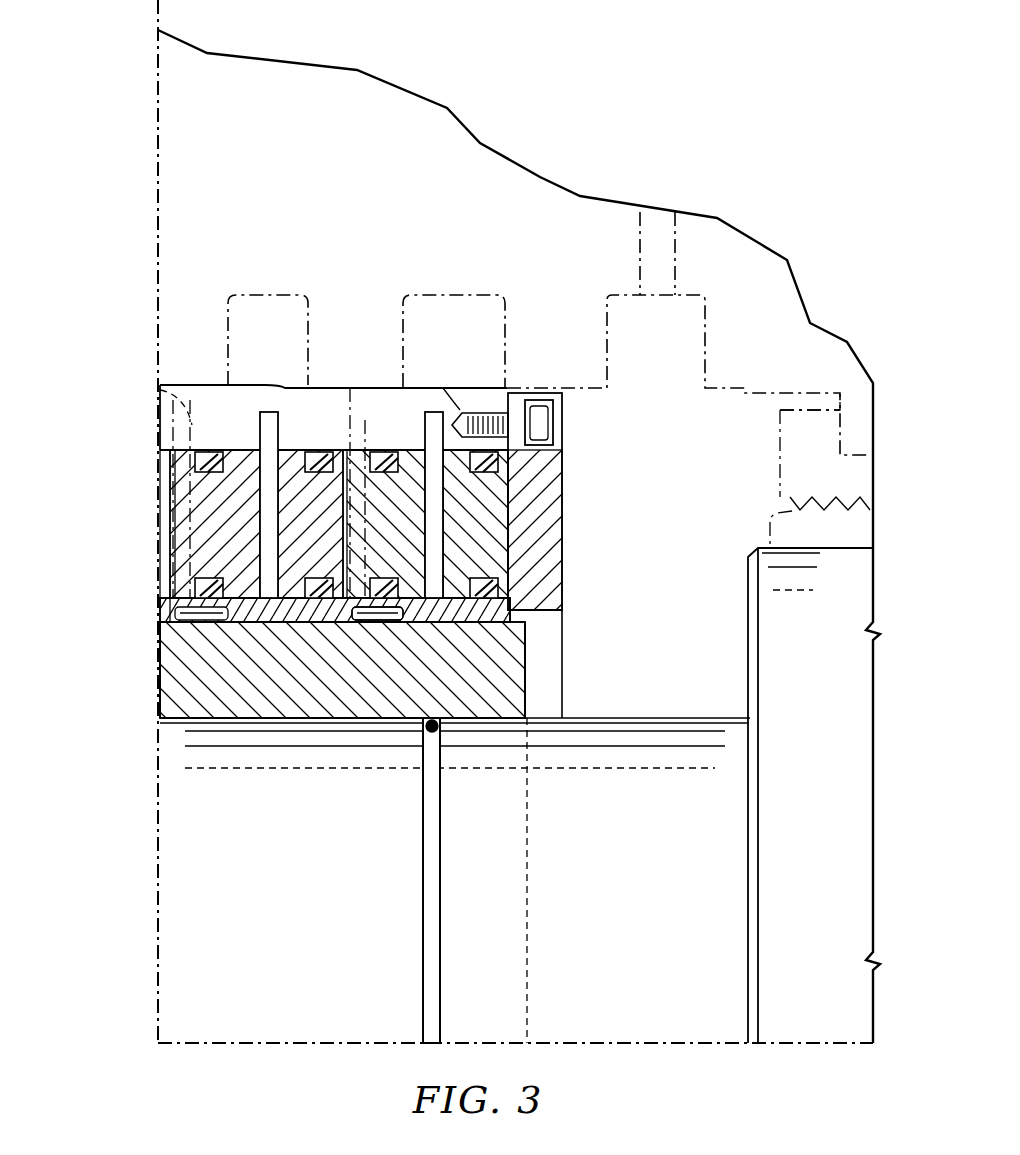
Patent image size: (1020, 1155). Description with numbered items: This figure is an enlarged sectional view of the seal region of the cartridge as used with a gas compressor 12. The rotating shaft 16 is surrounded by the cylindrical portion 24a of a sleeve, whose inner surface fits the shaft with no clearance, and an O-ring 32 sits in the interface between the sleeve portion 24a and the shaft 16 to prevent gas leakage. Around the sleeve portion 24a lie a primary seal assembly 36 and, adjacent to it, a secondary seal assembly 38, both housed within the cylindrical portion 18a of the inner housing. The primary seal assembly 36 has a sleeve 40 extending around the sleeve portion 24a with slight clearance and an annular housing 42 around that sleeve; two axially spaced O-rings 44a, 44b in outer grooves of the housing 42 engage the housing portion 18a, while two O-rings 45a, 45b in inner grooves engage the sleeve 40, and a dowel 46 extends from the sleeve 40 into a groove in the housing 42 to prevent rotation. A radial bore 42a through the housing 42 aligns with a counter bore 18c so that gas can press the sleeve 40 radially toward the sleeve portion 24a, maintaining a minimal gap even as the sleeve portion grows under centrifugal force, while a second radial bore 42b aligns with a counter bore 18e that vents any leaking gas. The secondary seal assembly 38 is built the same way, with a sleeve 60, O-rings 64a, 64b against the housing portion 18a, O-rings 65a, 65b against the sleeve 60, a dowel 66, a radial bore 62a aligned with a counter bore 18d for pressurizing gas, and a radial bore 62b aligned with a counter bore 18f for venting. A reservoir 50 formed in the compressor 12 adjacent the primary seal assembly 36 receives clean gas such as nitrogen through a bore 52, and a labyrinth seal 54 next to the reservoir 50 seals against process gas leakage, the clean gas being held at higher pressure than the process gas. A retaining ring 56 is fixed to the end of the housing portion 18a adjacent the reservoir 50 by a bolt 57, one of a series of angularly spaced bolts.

The gas compressor 12 is at (86, 514).
The shaft 16 is at (674, 733).
The cylindrical portion of inner housing 18a is at (373, 395).
The counter bore 18c is at (460, 408).
The counter bore 18d is at (282, 420).
The counter bore 18e is at (350, 392).
The counter bore 18f is at (160, 393).
The cylindrical portion of sleeve 24a is at (168, 672).
The O-ring 32 is at (422, 733).
The primary seal assembly 36 is at (462, 630).
The secondary seal assembly 38 is at (283, 632).
The sleeve 40 is at (522, 640).
The annular housing 42 is at (510, 535).
The radial bore 42a is at (386, 524).
The radial bore 42b is at (309, 524).
The O-ring 44a is at (386, 450).
The O-ring 44b is at (507, 490).
The O-ring 45a is at (385, 578).
The O-ring 45b is at (490, 578).
The dowel 46 is at (383, 620).
The reservoir 50 is at (681, 492).
The bore 52 is at (640, 230).
The labyrinth seal 54 is at (798, 418).
The retaining ring 56 is at (557, 468).
The bolt 57 is at (548, 428).
The sleeve 60 is at (230, 612).
The radial bore 62a is at (268, 495).
The radial bore 62b is at (172, 494).
The O-ring 64a is at (210, 450).
The O-ring 64b is at (310, 450).
The O-ring 65a is at (205, 578).
The O-ring 65b is at (323, 578).
The dowel 66 is at (178, 612).